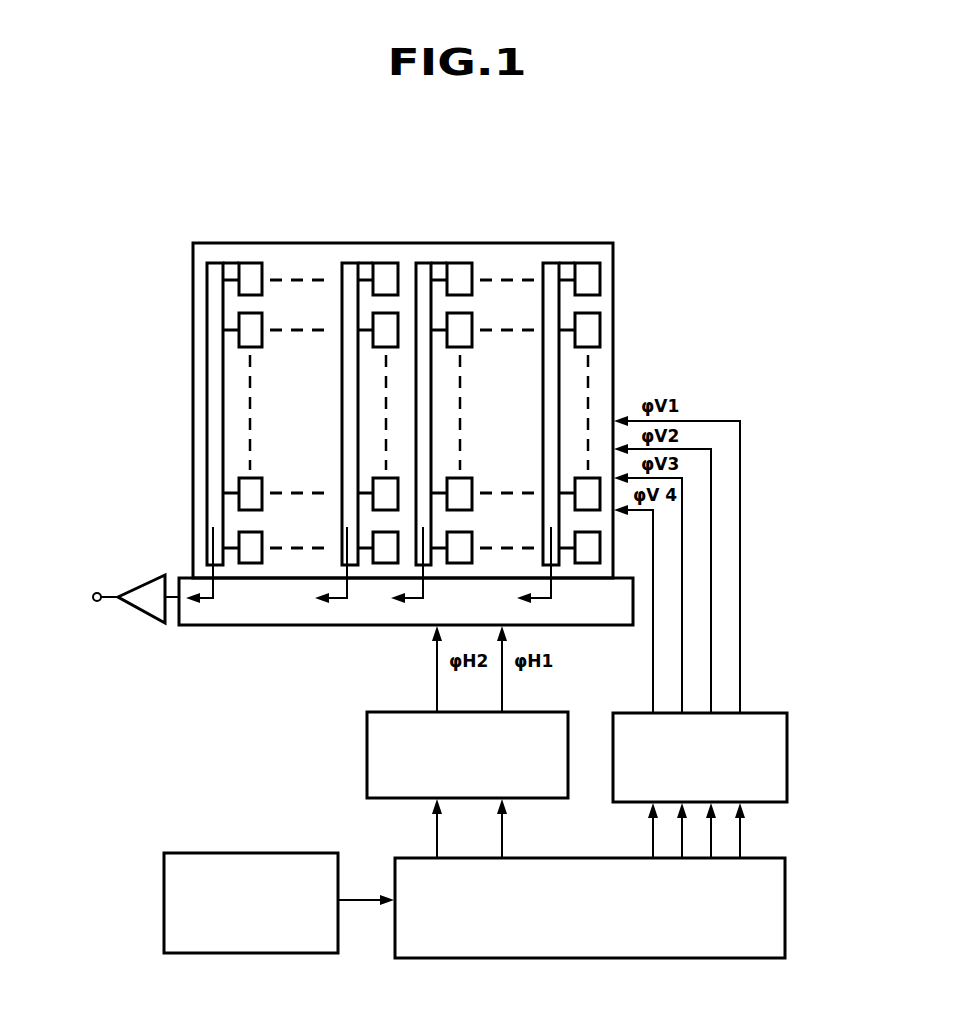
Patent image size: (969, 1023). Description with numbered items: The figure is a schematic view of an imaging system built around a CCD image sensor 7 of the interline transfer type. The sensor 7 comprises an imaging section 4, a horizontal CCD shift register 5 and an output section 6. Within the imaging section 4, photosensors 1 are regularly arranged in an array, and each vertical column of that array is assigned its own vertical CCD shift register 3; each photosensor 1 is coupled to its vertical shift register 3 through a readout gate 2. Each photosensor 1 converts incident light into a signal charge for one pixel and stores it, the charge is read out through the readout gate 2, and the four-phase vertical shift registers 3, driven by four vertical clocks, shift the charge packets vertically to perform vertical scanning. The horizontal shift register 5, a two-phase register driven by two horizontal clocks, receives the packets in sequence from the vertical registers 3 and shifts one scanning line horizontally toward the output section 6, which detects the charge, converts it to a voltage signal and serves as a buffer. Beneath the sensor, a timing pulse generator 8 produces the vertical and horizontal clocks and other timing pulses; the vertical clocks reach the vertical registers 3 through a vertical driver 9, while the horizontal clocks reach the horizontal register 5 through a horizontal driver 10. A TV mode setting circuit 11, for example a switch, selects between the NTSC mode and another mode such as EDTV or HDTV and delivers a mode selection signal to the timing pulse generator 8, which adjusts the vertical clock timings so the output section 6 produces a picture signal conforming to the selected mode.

The photosensor 1 is at (249, 268).
The readout gate 2 is at (220, 278).
The vertical CCD shift register 3 is at (424, 268).
The imaging section 4 is at (409, 378).
The horizontal CCD shift register 5 is at (263, 627).
The output section 6 is at (147, 612).
The CCD image sensor 7 is at (596, 238).
The timing pulse generator 8 is at (787, 903).
The vertical driver 9 is at (775, 712).
The horizontal driver 10 is at (566, 711).
The TV mode setting circuit 11 is at (315, 852).